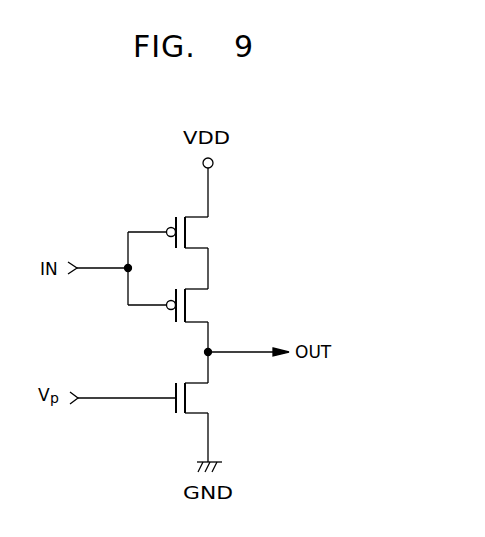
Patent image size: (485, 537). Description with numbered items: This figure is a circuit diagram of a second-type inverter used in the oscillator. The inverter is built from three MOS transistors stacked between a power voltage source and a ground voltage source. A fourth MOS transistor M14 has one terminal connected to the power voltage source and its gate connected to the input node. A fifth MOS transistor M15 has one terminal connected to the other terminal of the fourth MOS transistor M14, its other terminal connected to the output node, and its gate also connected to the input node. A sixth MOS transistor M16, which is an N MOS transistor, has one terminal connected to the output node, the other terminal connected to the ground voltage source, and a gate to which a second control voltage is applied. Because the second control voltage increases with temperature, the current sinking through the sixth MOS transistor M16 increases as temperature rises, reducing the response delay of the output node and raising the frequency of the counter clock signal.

The fourth MOS transistor M14 is at (189, 232).
The fifth MOS transistor M15 is at (189, 305).
The sixth MOS transistor M16 is at (164, 398).